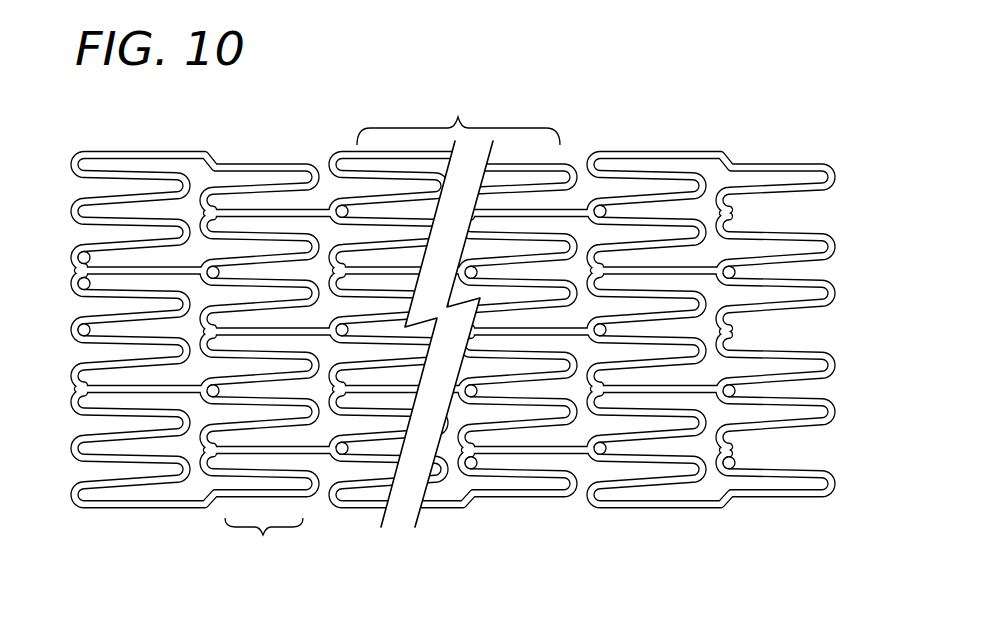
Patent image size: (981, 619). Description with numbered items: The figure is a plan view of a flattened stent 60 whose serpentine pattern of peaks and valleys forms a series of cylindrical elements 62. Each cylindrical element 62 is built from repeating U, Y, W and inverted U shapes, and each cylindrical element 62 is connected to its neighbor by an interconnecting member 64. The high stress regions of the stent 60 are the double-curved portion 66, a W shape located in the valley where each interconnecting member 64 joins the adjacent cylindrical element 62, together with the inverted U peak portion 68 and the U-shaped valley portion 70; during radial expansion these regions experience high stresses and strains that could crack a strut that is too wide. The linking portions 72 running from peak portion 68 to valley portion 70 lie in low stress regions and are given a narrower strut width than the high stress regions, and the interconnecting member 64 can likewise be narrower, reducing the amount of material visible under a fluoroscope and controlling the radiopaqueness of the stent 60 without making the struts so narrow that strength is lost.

The stent 60 is at (836, 210).
The cylindrical element 62 is at (533, 133).
The interconnecting member 64 is at (112, 276).
The double-curved portion (W) 66 is at (76, 262).
The peak portion (inverted U) 68 is at (194, 187).
The valley portion (U) 70 is at (72, 334).
The linking portion 72 is at (264, 543).